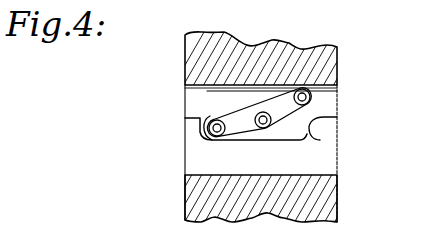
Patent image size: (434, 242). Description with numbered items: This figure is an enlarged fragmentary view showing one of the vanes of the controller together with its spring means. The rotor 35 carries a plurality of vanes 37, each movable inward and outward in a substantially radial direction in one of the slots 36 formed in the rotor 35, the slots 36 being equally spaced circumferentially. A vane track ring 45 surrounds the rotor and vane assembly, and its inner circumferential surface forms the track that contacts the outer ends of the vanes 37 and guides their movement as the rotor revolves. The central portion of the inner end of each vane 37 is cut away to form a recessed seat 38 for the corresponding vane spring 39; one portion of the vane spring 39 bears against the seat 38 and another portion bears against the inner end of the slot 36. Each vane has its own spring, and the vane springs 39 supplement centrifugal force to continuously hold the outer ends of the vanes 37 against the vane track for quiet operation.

The rotor 35 is at (332, 66).
The slot 36 is at (333, 100).
The vane 37 is at (328, 153).
The recessed seat 38 is at (333, 117).
The vane spring 39 is at (233, 113).
The vane track ring 45 is at (325, 193).